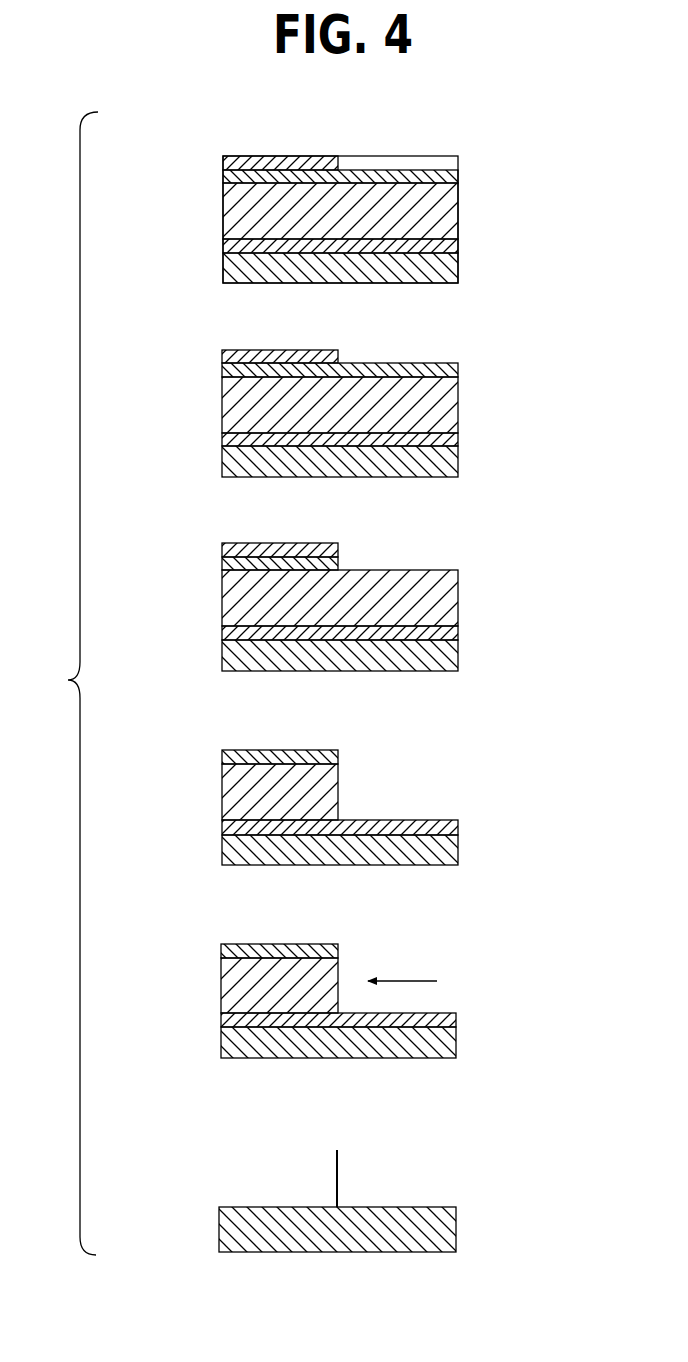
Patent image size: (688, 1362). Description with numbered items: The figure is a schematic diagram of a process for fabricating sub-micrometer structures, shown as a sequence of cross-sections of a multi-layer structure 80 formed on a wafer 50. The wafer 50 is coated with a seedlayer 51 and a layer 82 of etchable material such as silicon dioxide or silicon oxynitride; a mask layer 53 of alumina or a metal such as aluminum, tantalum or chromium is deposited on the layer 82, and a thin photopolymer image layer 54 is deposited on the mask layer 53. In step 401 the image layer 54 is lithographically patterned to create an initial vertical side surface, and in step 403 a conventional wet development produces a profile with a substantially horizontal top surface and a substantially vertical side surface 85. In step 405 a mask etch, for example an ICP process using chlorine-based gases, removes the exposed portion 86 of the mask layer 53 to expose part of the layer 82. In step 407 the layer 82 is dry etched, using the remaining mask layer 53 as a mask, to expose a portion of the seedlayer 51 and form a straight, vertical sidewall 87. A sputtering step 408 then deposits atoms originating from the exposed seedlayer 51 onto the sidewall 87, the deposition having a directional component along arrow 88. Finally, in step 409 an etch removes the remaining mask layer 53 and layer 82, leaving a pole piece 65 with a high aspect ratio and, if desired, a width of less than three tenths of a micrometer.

The multi-layer structure 80 is at (251, 147).
The image layer 54 is at (223, 157).
The mask layer 53 is at (458, 177).
The etchable material layer 82 is at (458, 208).
The seedlayer 51 is at (223, 242).
The wafer 50 is at (458, 265).
The vertical side surface 85 is at (338, 355).
The exposed portion of mask layer 86 is at (458, 363).
The sidewall 87 is at (338, 775).
The arrow 88 is at (404, 980).
The pole piece 65 is at (338, 1183).
The lithographic patterning step 401 is at (176, 194).
The wet development step 403 is at (176, 388).
The mask etch step 405 is at (176, 596).
The dry etch step 407 is at (176, 785).
The sputtering step 408 is at (176, 982).
The final etch step 409 is at (176, 1195).